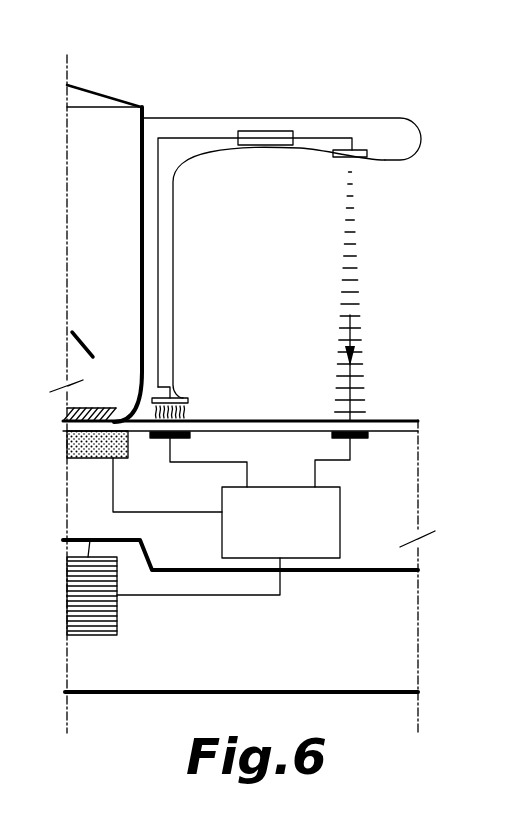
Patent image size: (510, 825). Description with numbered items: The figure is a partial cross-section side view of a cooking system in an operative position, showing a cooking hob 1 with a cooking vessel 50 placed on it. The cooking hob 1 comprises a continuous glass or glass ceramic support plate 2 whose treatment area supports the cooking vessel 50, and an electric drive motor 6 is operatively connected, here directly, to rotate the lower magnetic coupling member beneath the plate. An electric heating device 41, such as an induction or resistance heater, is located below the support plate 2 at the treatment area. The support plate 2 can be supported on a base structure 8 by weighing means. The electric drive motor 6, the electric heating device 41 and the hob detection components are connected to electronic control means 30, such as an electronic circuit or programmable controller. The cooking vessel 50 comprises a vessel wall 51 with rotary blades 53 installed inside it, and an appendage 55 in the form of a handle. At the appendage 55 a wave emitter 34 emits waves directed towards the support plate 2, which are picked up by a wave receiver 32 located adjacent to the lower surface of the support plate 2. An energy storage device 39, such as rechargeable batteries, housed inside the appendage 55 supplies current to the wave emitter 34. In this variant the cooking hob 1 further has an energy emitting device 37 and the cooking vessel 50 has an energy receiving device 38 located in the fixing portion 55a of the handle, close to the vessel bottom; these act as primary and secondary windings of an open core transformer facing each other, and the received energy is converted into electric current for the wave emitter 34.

The cooking hob 1 is at (229, 392).
The support plate 2 is at (302, 421).
The electric drive motor 6 is at (113, 618).
The base structure 8 is at (352, 690).
The electronic control means 30 is at (296, 538).
The wave receiver 32 is at (355, 440).
The wave emitter 34 is at (336, 158).
The energy emitting device 37 is at (157, 440).
The energy receiving device 38 is at (186, 398).
The energy storage device 39 is at (262, 131).
The electric heating device 41 is at (100, 460).
The cooking vessel 50 is at (129, 68).
The vessel wall 51 is at (142, 218).
The rotary blades 53 is at (81, 336).
The appendage 55 is at (371, 120).
The fixing portion 55a is at (175, 290).